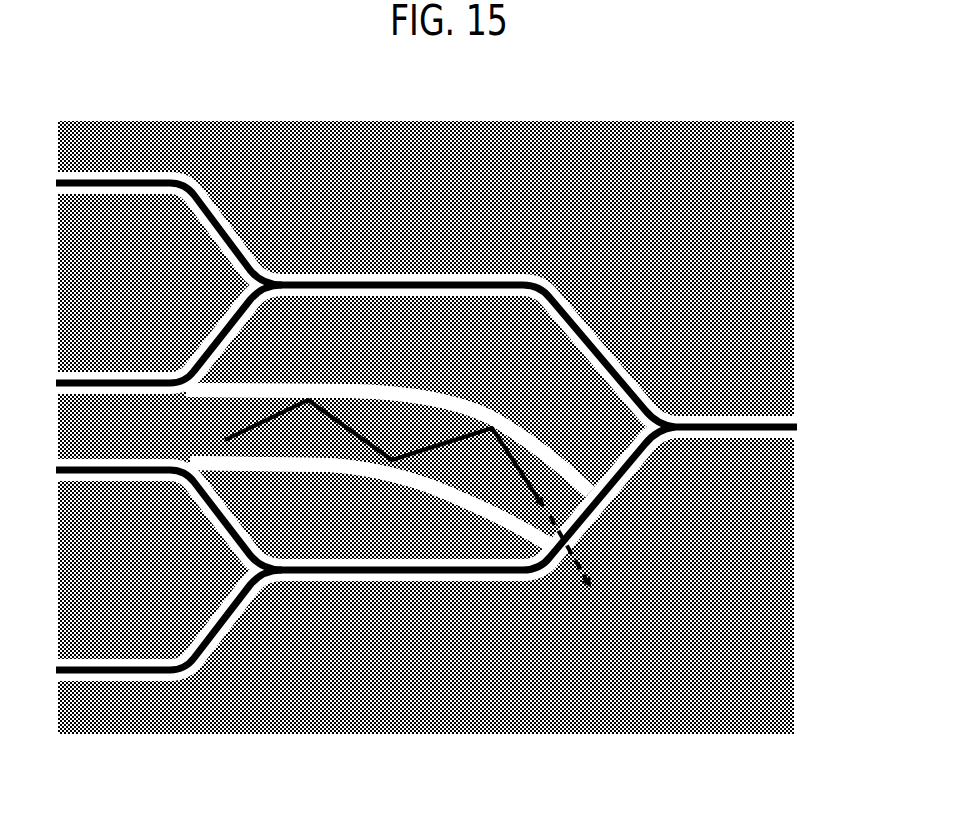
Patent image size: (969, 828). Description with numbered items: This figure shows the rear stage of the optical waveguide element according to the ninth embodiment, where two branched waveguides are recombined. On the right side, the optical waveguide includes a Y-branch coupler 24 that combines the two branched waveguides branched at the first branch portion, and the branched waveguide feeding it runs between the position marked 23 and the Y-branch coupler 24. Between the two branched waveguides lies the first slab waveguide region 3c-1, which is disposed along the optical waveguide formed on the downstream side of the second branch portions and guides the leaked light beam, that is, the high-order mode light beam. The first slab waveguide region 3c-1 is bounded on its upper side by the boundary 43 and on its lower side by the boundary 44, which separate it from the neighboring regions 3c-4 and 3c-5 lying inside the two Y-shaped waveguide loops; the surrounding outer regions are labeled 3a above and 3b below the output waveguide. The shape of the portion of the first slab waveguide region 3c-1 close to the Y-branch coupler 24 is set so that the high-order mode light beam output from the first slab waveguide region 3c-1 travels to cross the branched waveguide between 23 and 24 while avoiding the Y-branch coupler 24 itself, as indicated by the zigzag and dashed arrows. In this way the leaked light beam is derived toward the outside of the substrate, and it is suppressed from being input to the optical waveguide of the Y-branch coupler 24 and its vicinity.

The first boundary of core region 43 is at (435, 390).
The second boundary of core region 44 is at (445, 480).
The Y-branch waveguide junction 23 is at (287, 570).
The Y-branch coupler 24 is at (680, 420).
The first cladding region 3a is at (662, 218).
The second cladding region 3b is at (660, 625).
The first slab waveguide region 3c-1 is at (133, 429).
The fourth core region 3c-4 is at (388, 410).
The fifth core region 3c-5 is at (370, 504).